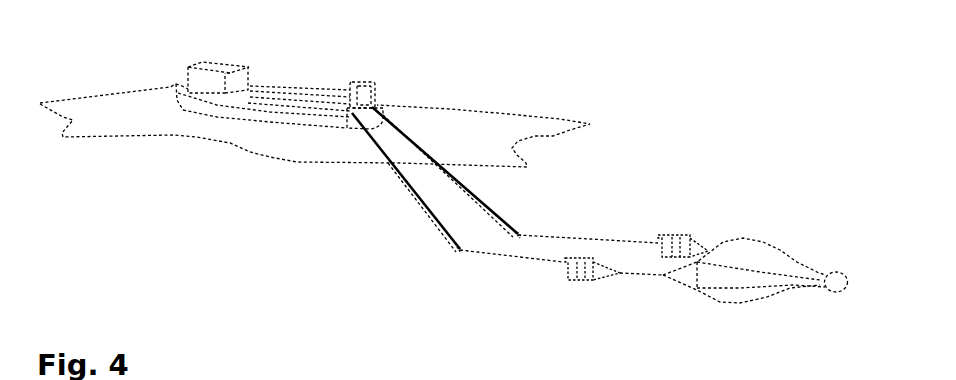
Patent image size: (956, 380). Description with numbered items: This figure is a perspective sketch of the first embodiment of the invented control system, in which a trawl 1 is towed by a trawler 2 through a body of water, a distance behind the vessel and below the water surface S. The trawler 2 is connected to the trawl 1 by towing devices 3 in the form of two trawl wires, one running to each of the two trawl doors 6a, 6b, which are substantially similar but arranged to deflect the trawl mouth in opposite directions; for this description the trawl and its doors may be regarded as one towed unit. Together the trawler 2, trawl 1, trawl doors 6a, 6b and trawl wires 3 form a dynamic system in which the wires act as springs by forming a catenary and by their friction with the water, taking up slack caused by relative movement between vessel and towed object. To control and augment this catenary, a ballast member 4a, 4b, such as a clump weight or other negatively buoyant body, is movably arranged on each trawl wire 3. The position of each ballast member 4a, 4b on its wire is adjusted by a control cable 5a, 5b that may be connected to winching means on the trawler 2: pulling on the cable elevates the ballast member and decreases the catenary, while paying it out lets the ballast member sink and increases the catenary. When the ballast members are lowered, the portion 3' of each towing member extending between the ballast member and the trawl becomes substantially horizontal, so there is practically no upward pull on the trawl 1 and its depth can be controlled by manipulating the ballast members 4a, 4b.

The trawl 1 is at (778, 249).
The trawler 2 is at (268, 86).
The towing device 3 is at (360, 207).
The portion of the towing member extending between the ballast member and the trawl 3' is at (603, 204).
The ballast member 4a is at (458, 252).
The ballast member 4b is at (515, 240).
The control cable 5a is at (423, 202).
The control cable 5b is at (483, 196).
The trawl door 6a is at (577, 280).
The trawl door 6b is at (673, 230).
The water surface S is at (509, 122).